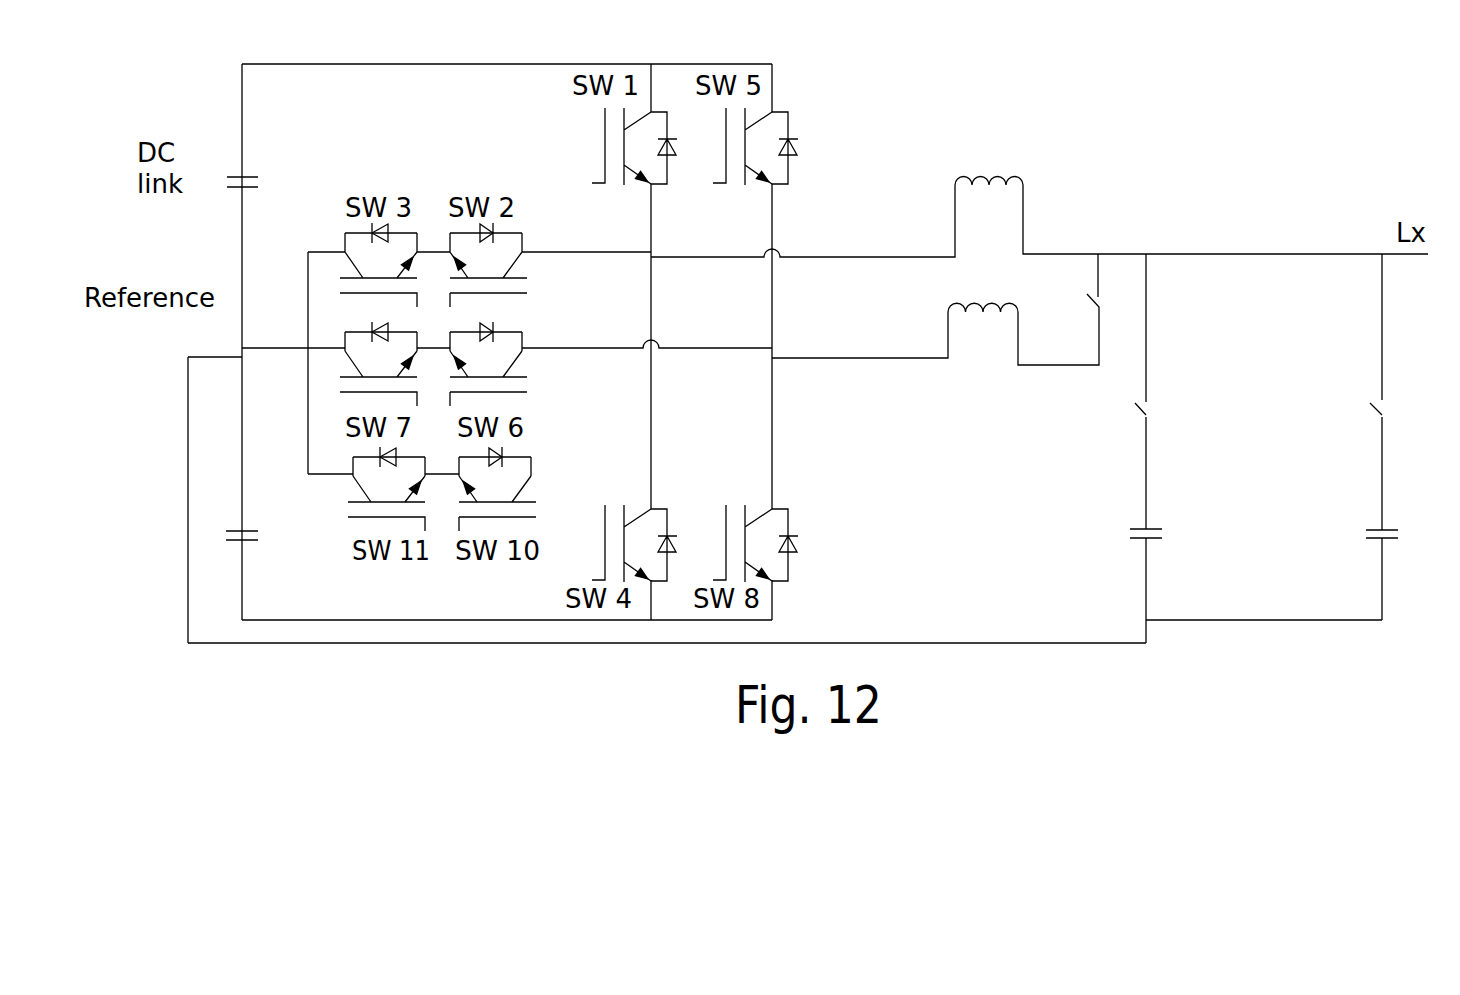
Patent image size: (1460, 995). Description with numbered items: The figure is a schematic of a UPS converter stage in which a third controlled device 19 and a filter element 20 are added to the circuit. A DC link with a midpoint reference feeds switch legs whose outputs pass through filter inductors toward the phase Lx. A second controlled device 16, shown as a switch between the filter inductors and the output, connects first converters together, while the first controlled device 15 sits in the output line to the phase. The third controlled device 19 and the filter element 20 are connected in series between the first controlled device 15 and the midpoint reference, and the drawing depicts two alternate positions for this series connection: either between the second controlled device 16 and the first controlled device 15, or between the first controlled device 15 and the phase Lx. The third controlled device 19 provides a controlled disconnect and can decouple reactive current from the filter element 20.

The first controlled device 15 is at (1233, 254).
The second controlled device 16 is at (1088, 297).
The third controlled device 19 is at (1143, 418).
The filter element 20 is at (1133, 540).